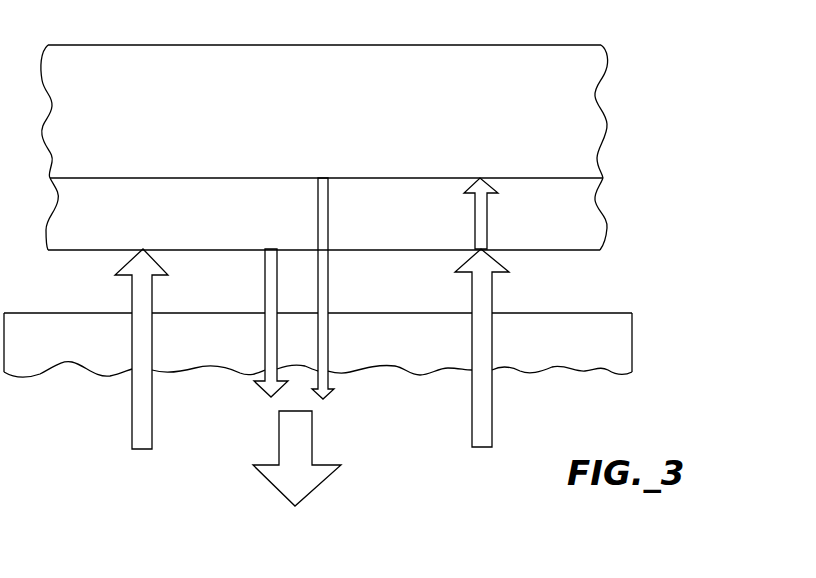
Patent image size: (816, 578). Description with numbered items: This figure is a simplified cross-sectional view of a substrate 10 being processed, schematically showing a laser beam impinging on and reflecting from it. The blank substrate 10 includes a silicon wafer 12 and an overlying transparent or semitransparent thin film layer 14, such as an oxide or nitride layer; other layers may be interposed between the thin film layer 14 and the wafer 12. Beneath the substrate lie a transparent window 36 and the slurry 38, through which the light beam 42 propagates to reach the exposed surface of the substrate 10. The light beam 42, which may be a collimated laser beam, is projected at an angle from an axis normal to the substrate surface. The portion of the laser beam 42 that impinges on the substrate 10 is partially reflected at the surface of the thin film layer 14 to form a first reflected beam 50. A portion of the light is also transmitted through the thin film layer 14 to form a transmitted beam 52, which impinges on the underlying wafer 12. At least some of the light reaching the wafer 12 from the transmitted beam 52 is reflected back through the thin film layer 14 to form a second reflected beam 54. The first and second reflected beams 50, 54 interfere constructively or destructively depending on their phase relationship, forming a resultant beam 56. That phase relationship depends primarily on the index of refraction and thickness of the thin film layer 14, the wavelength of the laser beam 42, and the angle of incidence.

The substrate 10 is at (374, 147).
The silicon wafer 12 is at (602, 101).
The thin film layer 14 is at (602, 217).
The transparent window 36 is at (630, 342).
The slurry 38 is at (571, 287).
The light beam 42 is at (138, 423).
The first reflected beam 50 is at (270, 350).
The transmitted beam 52 is at (480, 225).
The second reflected beam 54 is at (327, 350).
The resultant beam 56 is at (289, 440).